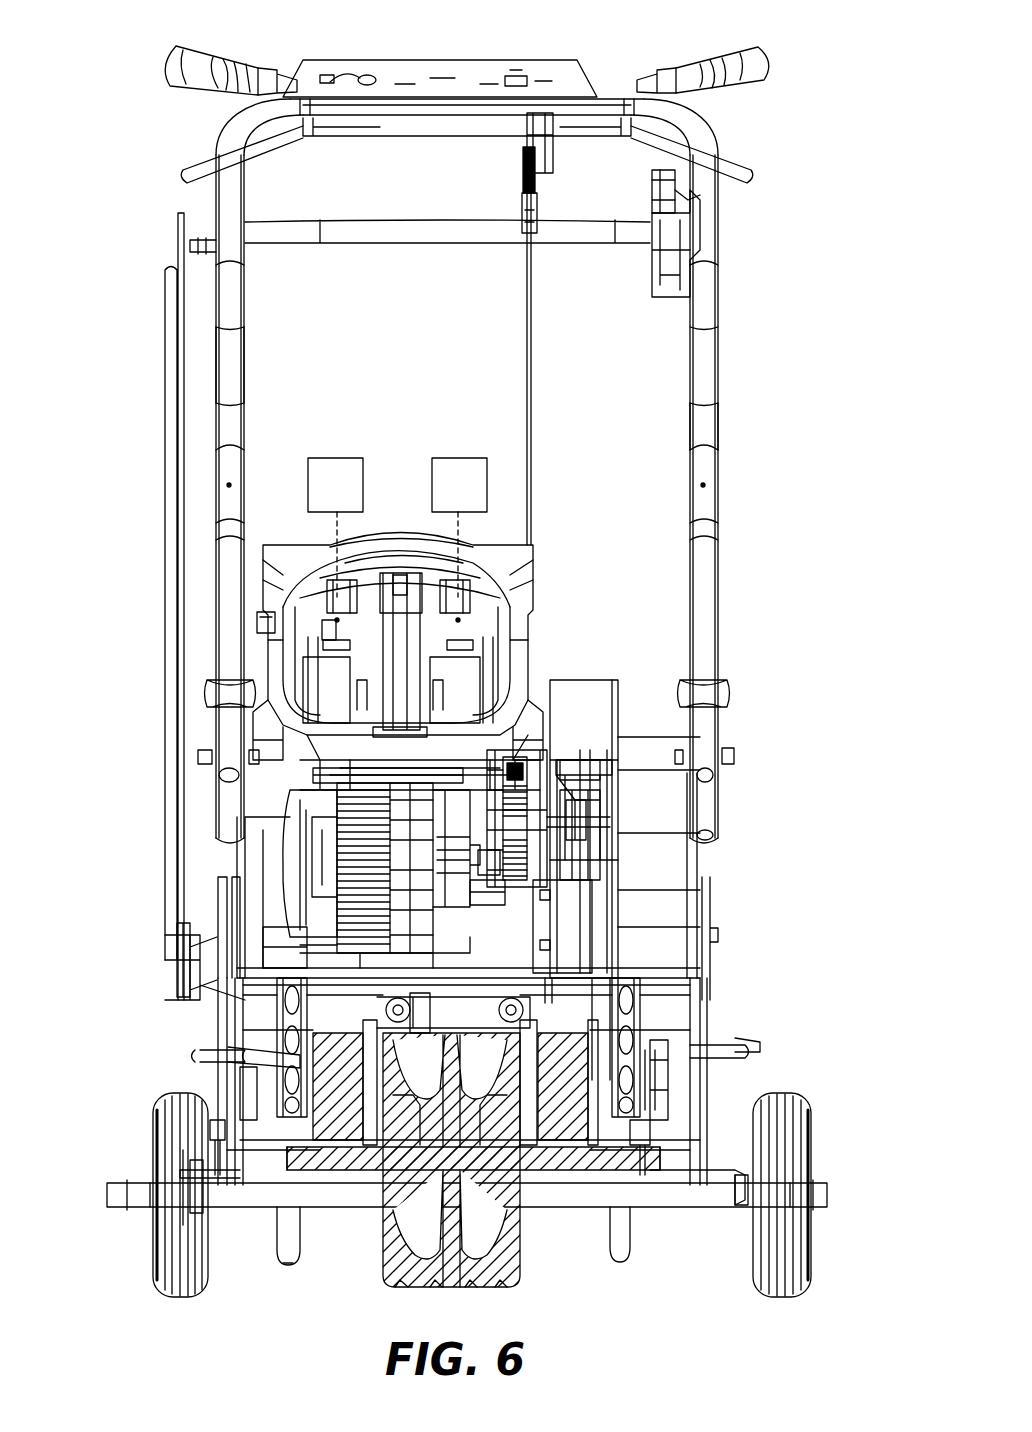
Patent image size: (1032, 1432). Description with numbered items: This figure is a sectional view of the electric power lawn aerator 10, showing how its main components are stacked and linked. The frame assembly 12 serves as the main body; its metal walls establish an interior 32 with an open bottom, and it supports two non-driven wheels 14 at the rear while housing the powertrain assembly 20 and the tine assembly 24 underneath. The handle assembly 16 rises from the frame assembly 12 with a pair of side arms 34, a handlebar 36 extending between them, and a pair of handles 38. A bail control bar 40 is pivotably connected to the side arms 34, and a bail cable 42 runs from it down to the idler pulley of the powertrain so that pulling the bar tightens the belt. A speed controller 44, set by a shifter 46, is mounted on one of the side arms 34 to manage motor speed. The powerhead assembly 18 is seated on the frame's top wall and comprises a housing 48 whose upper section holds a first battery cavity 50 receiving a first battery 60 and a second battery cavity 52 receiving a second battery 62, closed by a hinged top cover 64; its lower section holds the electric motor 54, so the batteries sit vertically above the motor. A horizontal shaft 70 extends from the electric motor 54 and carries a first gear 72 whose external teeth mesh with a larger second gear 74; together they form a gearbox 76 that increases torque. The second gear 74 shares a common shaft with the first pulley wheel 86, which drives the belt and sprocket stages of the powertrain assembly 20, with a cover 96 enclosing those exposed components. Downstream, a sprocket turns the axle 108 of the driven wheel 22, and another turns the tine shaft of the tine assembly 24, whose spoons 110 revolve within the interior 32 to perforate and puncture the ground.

The electric power lawn aerator 10 is at (842, 150).
The frame assembly 12 is at (243, 857).
The non-driven wheels 14 is at (170, 1118).
The handle assembly 16 is at (722, 363).
The powerhead assembly 18 is at (540, 553).
The powertrain assembly 20 is at (595, 762).
The driven wheel 22 is at (387, 1263).
The tine assembly 24 is at (277, 1242).
The interior 32 is at (355, 1017).
The side arms 34 is at (217, 372).
The handlebar 36 is at (620, 85).
The handles 38 is at (190, 65).
The bail control bar 40 is at (742, 166).
The bail cable 42 is at (533, 308).
The speed controller 44 is at (680, 227).
The shifter 46 is at (660, 182).
The housing 48 is at (258, 622).
The first battery cavity 50 is at (470, 625).
The second battery cavity 52 is at (325, 632).
The electric motor 54 is at (353, 870).
The first battery 60 is at (474, 504).
The second battery 62 is at (350, 504).
The top cover 64 is at (400, 580).
The shaft 70 is at (477, 870).
The first gear 72 is at (484, 864).
The second gear 74 is at (516, 760).
The gearbox 76 is at (547, 755).
The first pulley wheel 86 is at (575, 784).
The cover 96 is at (620, 697).
The axle 108 is at (563, 1162).
The spoons 110 is at (292, 1233).